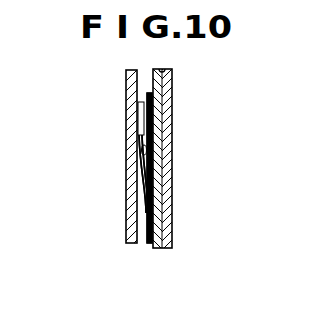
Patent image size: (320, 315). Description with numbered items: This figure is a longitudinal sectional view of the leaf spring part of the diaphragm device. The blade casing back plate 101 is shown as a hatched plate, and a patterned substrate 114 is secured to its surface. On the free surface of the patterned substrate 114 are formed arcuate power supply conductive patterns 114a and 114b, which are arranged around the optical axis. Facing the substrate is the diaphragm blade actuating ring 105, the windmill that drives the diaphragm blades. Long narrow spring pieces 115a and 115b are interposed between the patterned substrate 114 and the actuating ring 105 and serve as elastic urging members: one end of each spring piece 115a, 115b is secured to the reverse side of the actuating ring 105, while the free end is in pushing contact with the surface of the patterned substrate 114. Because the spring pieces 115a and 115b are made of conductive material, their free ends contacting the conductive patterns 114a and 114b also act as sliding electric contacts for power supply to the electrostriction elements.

The diaphragm blade actuating ring 105 is at (126, 98).
The blade casing back plate 101 is at (173, 124).
The patterned substrate 114 is at (173, 90).
The arcuate power supply conductive pattern 114a is at (152, 165).
The arcuate power supply conductive pattern 114b is at (149, 168).
The spring piece 115a is at (127, 197).
The spring piece 115b is at (143, 174).